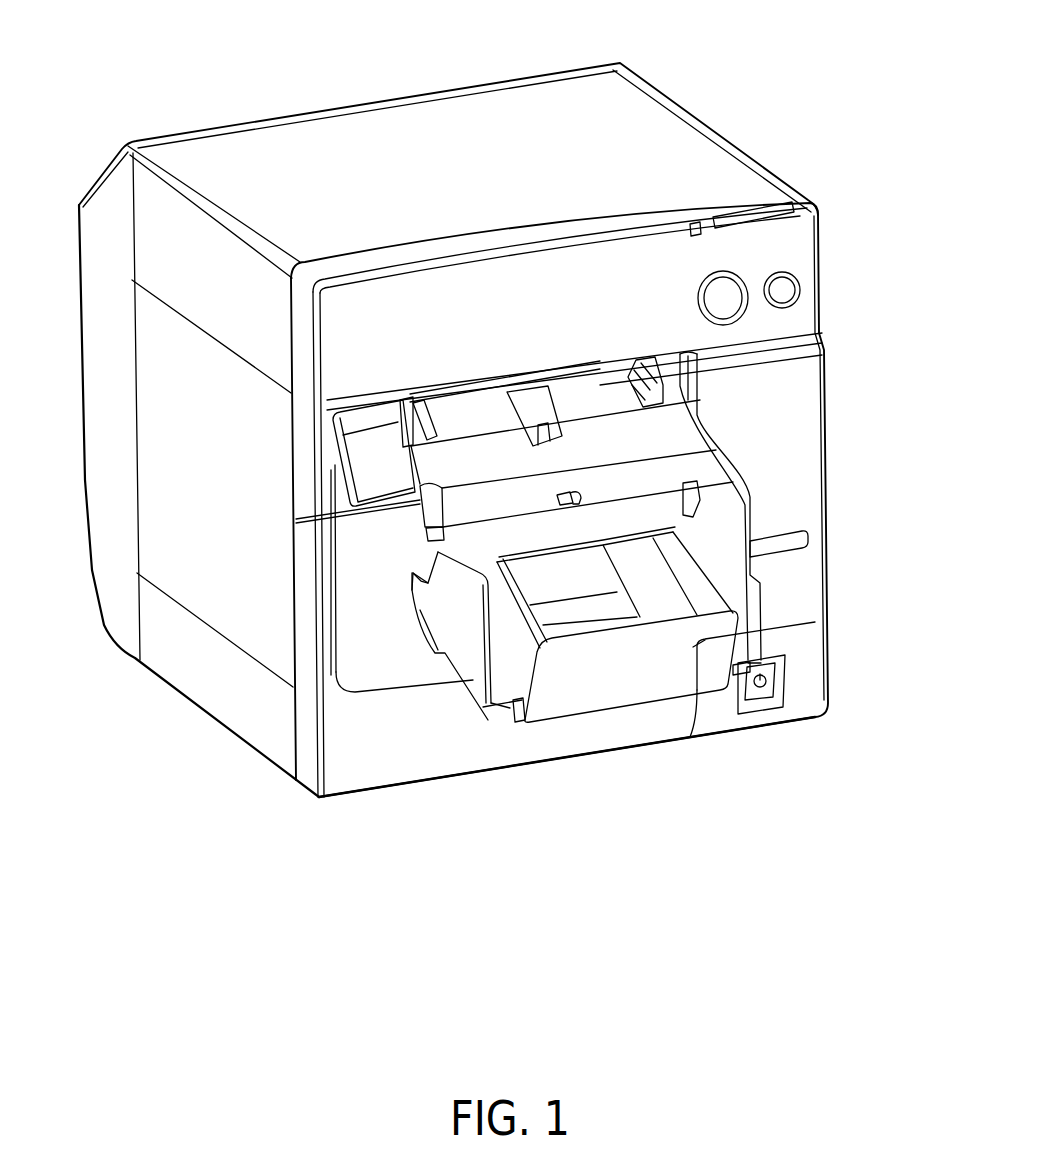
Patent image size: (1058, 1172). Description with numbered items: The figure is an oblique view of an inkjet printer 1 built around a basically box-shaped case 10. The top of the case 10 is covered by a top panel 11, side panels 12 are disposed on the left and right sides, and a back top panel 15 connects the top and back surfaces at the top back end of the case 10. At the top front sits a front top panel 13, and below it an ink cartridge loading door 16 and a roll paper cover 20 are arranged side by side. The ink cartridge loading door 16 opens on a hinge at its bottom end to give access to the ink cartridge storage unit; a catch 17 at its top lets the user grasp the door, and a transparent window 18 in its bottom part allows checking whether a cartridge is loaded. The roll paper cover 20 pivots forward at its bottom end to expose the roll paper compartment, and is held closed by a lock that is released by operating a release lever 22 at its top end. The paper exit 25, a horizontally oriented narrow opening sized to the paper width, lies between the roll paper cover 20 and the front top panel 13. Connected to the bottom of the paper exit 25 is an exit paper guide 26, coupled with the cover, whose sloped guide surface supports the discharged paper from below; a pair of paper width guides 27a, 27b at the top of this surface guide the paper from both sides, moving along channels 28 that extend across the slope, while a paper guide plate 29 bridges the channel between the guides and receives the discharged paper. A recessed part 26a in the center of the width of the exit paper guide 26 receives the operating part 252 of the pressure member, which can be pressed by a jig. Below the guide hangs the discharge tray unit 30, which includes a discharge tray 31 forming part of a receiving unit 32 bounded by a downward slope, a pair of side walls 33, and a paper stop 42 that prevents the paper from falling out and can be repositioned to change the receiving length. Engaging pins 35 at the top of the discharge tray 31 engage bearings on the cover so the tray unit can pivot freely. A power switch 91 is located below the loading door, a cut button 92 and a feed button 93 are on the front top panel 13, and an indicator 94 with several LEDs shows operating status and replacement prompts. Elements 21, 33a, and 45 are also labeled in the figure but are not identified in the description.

The inkjet printer 1 is at (696, 19).
The case 10 is at (712, 130).
The top panel 11 is at (446, 128).
The side panels 12 is at (170, 565).
The front top panel 13 is at (803, 257).
The back top panel 15 is at (101, 164).
The ink cartridge loading door 16 is at (807, 425).
The catch 17 is at (828, 352).
The transparent window 18 is at (807, 542).
The roll paper cover 20 is at (317, 720).
The drawer front edge 21 is at (367, 684).
The release lever 22 is at (362, 470).
The paper exit 25 is at (590, 395).
The exit paper guide 26 is at (400, 510).
The recessed part 26a is at (578, 495).
The paper width guide 27a is at (653, 358).
The paper width guide 27b is at (407, 398).
The channels 28 is at (450, 430).
The paper guide plate 29 is at (528, 392).
The discharge tray unit 30 is at (747, 515).
The discharge tray 31 is at (492, 720).
The receiving unit 32 is at (510, 722).
The side walls 33 is at (476, 692).
The bracket inclined portion 33a is at (438, 653).
The engaging pins 35 is at (750, 460).
The paper stop 42 is at (662, 690).
The foot 45 is at (735, 676).
The power switch 91 is at (787, 674).
The cut button 92 is at (737, 272).
The feed button 93 is at (800, 303).
The indicator 94 is at (693, 220).
The operating part 252 is at (563, 506).